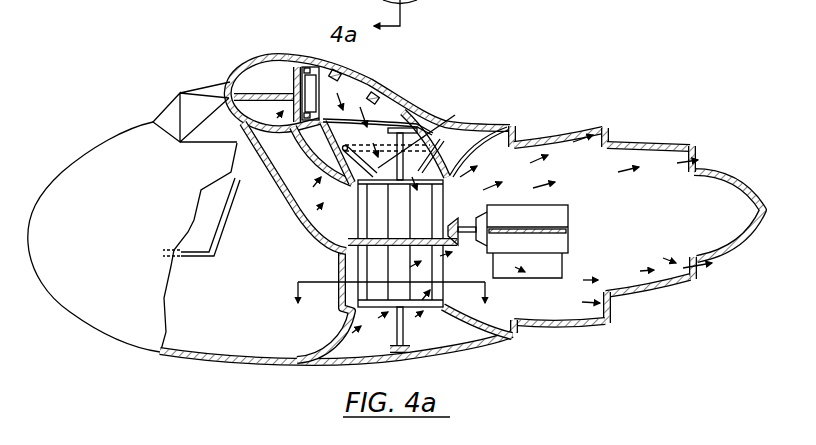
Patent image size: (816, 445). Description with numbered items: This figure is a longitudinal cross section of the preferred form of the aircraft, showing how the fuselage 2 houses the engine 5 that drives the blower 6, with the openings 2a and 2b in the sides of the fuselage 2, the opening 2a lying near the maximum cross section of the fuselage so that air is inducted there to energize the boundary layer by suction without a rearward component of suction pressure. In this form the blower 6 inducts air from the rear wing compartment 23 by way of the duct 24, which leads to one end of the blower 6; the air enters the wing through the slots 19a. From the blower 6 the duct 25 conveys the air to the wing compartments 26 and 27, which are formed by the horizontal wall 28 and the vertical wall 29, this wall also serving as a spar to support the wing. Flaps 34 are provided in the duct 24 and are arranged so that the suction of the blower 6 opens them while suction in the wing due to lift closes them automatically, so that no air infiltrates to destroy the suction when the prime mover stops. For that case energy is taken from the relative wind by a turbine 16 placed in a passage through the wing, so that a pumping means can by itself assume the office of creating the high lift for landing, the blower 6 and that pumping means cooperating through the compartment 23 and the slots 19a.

The fuselage 2 is at (100, 334).
The opening 2a is at (345, 360).
The opening 2b is at (612, 140).
The engine 5 is at (525, 213).
The blower 6 is at (433, 211).
The turbine 16 is at (393, 303).
The slots 19a is at (335, 68).
The rear wing compartment 23 is at (343, 100).
The duct 24 is at (411, 158).
The duct 25 is at (288, 197).
The wing compartment 26 is at (258, 113).
The wing compartment 27 is at (260, 70).
The horizontal wall 28 is at (233, 85).
The vertical wall 29 is at (272, 85).
The flaps 34 is at (433, 132).